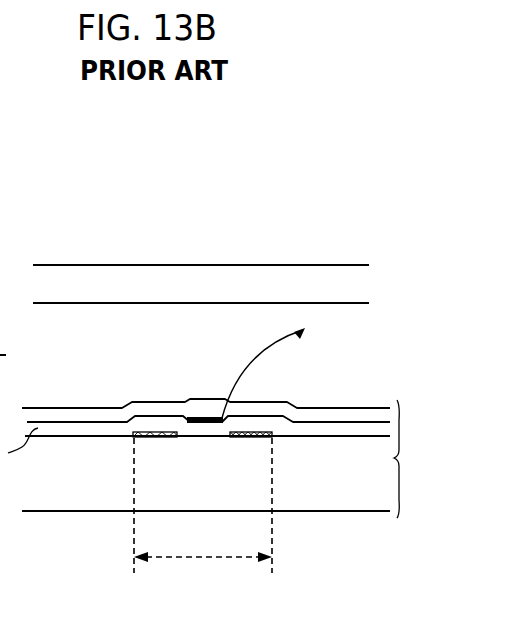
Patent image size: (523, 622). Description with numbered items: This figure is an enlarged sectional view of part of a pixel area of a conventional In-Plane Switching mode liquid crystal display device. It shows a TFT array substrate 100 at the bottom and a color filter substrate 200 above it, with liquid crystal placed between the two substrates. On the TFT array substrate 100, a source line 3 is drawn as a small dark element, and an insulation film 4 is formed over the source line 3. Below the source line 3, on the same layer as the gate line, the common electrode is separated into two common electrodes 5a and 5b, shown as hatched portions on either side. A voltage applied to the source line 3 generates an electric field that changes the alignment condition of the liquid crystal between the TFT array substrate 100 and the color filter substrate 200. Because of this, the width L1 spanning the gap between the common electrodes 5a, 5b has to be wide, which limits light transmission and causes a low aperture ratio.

The color filter substrate 200 is at (360, 289).
The thin film transistor array substrate 100 is at (234, 459).
The insulation film 4 is at (43, 421).
The source line 3 is at (200, 417).
The common electrode 5a is at (132, 438).
The common electrode 5b is at (273, 437).
The width L1 is at (203, 516).